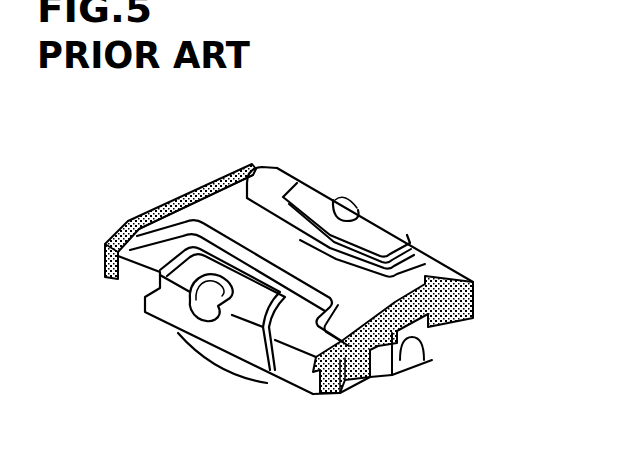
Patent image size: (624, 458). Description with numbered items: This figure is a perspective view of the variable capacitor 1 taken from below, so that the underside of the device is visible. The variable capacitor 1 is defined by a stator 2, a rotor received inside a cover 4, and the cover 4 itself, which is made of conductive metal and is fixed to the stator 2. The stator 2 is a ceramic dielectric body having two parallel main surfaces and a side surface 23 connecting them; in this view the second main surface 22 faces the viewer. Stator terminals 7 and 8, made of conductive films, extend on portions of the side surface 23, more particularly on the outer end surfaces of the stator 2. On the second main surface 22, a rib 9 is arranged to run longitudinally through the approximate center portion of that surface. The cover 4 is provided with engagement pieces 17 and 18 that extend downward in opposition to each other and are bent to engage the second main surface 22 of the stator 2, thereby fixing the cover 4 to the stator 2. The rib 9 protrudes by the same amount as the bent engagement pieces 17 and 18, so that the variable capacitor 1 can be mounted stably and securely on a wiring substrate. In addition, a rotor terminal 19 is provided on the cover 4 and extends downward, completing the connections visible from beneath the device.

The variable capacitor 1 is at (70, 141).
The stator 2 is at (284, 166).
The cover 4 is at (187, 357).
The stator terminal 7 is at (140, 213).
The stator terminal 8 is at (453, 325).
The rib 9 is at (213, 203).
The engagement piece 17 is at (380, 228).
The engagement piece 18 is at (250, 306).
The rotor terminal 19 is at (427, 330).
The second main surface 22 is at (282, 183).
The side surface 23 is at (139, 279).